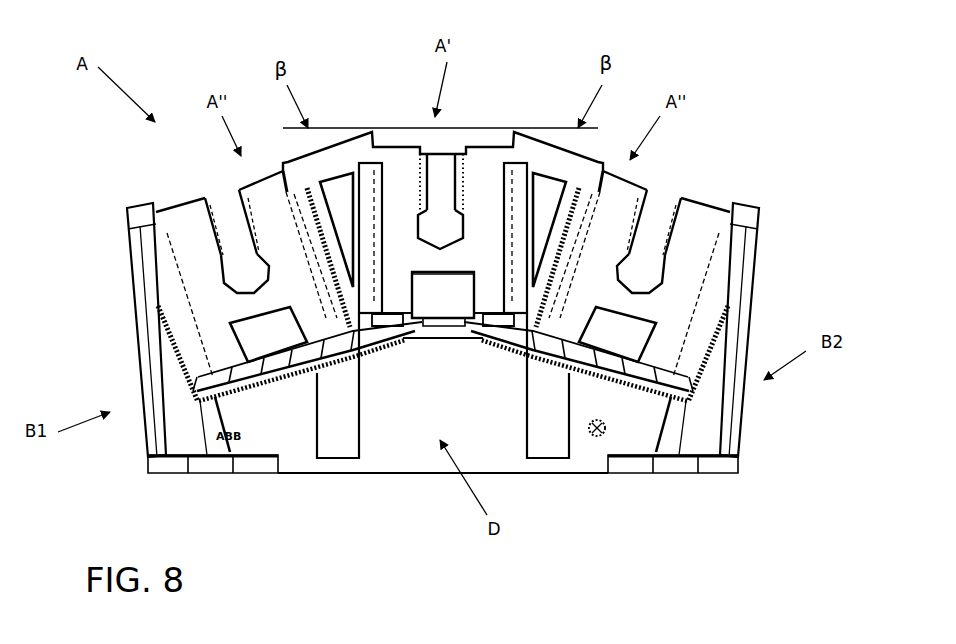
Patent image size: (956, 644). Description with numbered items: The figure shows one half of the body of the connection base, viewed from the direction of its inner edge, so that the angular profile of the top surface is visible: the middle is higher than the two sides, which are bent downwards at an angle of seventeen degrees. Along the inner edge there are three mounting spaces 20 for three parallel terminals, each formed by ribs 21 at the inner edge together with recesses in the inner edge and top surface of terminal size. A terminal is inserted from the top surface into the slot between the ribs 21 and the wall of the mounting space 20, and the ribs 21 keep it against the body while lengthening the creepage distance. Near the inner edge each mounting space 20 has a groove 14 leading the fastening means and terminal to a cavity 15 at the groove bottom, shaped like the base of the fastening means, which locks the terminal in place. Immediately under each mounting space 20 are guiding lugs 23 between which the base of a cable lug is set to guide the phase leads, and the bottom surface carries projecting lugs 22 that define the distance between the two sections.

The groove 14 is at (227, 240).
The cavity 15 is at (233, 276).
The mounting space 20 is at (177, 204).
The ribs 21 is at (143, 243).
The projecting lugs 22 is at (163, 467).
The guiding lugs 23 is at (192, 467).